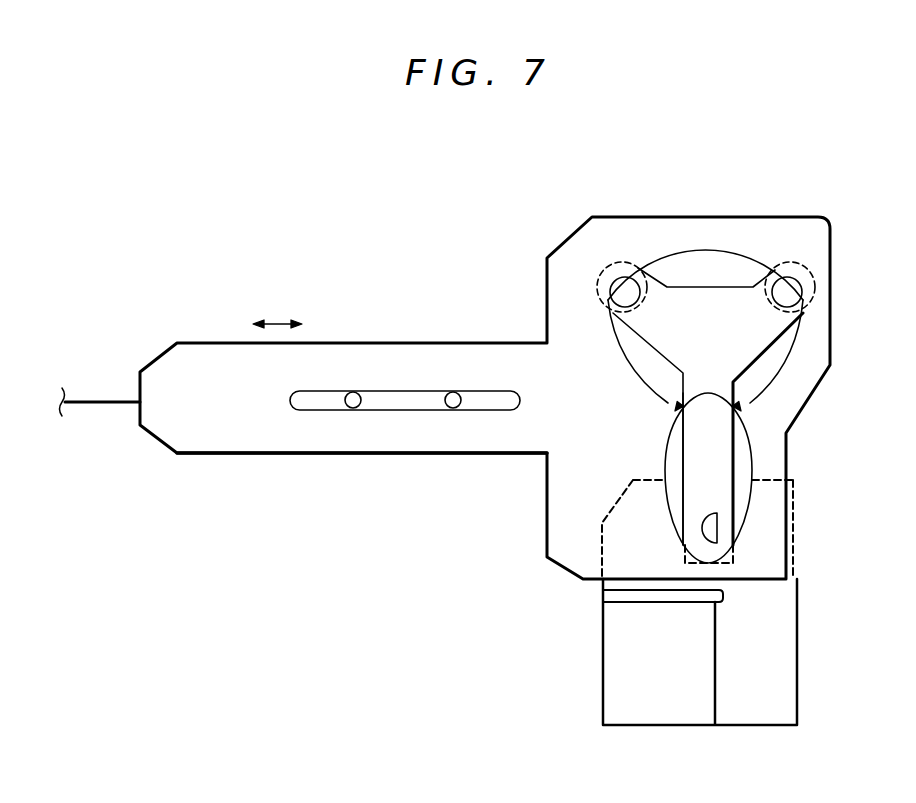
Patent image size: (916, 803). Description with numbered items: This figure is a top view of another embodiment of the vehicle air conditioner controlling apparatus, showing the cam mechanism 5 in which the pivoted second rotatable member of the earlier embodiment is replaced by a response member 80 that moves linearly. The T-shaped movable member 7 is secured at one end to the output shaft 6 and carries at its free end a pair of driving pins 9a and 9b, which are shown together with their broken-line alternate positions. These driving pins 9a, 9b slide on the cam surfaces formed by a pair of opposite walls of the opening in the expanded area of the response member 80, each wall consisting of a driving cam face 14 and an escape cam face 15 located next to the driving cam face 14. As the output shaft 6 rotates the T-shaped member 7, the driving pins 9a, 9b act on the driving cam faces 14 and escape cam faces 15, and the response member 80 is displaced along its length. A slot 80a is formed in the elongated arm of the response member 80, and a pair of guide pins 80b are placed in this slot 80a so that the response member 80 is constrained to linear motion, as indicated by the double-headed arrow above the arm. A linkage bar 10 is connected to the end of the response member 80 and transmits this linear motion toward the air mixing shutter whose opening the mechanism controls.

The cam mechanism 5 is at (536, 190).
The output shaft 6 is at (712, 528).
The T-shaped movable member 7 is at (723, 448).
The driving pin 9a is at (790, 290).
The driving pin 9b is at (618, 293).
The linkage bar 10 is at (96, 401).
The driving cam face 14 is at (638, 365).
The escape cam face 15 is at (748, 467).
The response member 80 is at (429, 442).
The slot 80a is at (385, 404).
The guide pin 80b is at (354, 392).